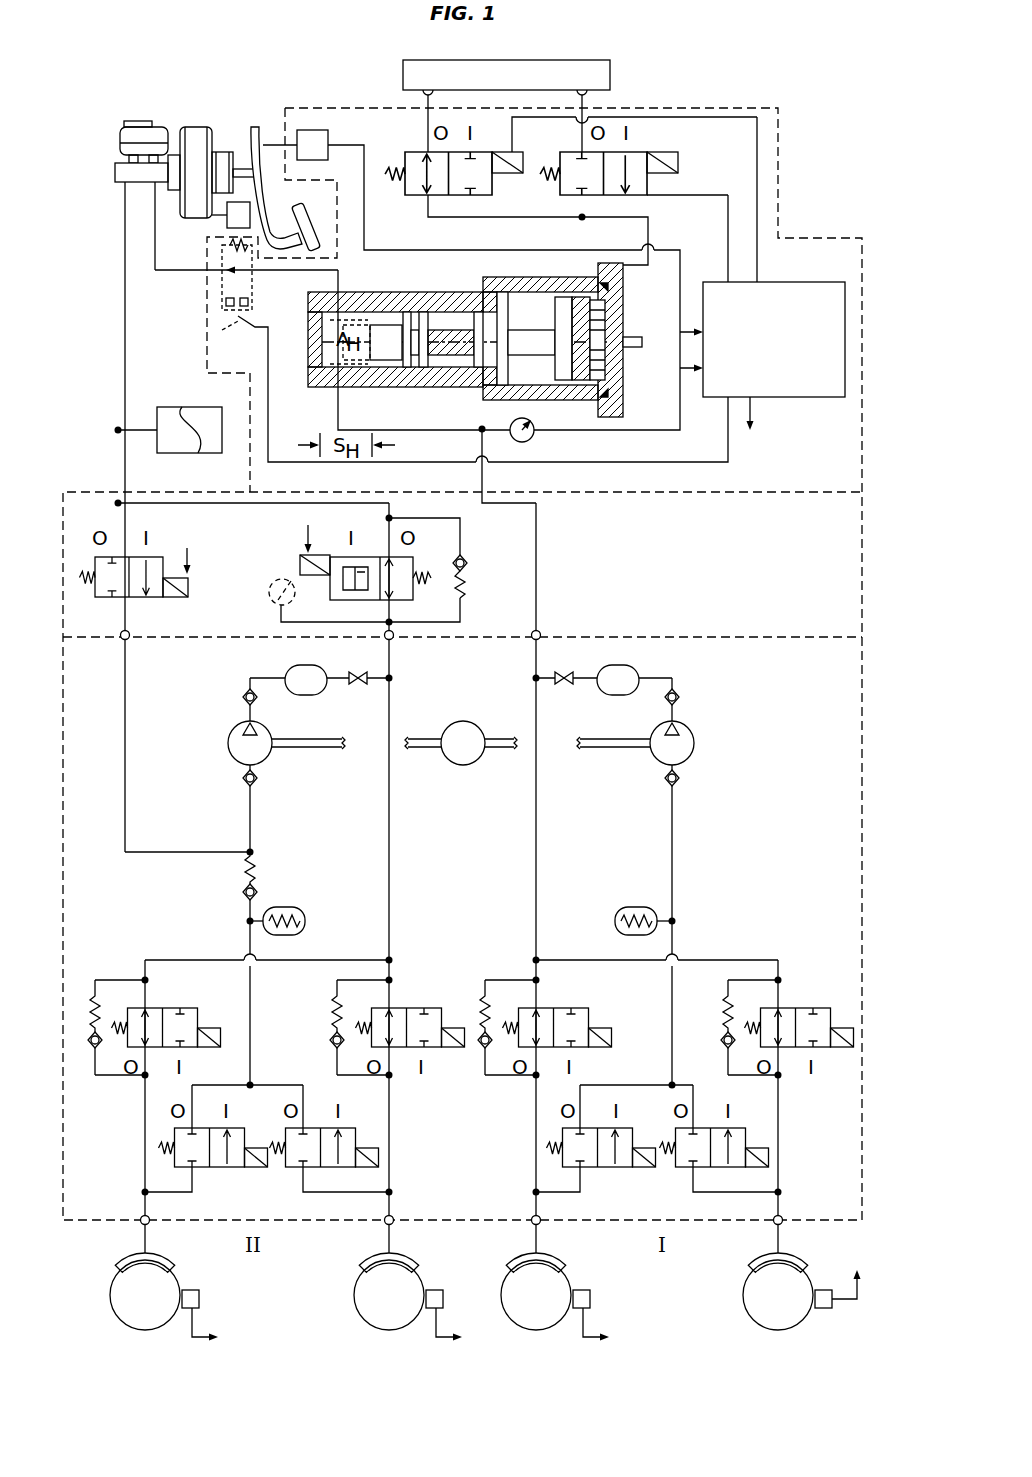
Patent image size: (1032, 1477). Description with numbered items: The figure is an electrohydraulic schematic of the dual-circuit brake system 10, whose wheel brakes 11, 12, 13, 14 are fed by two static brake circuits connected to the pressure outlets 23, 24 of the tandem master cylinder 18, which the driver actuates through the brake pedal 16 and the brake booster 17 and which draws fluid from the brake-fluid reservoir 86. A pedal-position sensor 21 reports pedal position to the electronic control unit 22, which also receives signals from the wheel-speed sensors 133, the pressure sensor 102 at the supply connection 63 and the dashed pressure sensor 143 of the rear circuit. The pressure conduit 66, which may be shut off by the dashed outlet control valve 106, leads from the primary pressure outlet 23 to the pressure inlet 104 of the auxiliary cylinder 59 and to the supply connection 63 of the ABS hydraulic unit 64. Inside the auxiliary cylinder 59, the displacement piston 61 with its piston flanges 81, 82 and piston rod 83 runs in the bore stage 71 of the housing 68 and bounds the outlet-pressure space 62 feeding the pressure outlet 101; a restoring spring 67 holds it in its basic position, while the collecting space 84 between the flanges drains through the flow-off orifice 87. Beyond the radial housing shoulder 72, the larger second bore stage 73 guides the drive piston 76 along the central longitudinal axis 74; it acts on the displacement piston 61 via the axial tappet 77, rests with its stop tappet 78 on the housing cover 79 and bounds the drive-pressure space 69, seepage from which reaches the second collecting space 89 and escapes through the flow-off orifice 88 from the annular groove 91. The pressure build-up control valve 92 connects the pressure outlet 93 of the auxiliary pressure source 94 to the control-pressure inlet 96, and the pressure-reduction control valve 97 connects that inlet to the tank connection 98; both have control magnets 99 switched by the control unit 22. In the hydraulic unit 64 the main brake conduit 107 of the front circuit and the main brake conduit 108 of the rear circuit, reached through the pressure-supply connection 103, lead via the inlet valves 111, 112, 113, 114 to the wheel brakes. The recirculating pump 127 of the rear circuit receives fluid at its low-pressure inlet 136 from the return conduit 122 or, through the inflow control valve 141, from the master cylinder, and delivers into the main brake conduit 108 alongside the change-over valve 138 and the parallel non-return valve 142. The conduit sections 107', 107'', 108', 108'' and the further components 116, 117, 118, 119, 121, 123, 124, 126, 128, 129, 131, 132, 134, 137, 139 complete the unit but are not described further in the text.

The dual-circuit brake system 10 is at (111, 123).
The wheel brake 11 is at (564, 1274).
The wheel brake 12 is at (806, 1274).
The wheel brake 13 is at (176, 1274).
The wheel brake 14 is at (418, 1274).
The brake pedal 16 is at (312, 240).
The brake booster 17 is at (194, 124).
The tandem master cylinder 18 is at (111, 172).
The pedal-position sensor 21 is at (326, 131).
The electronic control unit 22 is at (805, 281).
The primary pressure outlet 23 is at (155, 188).
The secondary pressure outlet 24 is at (127, 186).
The auxiliary cylinder 59 is at (304, 386).
The displacement piston 61 is at (384, 322).
The outlet-pressure space 62 is at (323, 346).
The supply connection 63 is at (541, 632).
The hydraulic unit 64 is at (700, 648).
The pressure conduit 66 is at (186, 273).
The restoring spring 67 is at (321, 318).
The housing 68 is at (630, 368).
The drive-pressure space 69 is at (604, 375).
The bore stage 71 is at (452, 358).
The radial housing shoulder 72 is at (502, 291).
The second bore stage 73 is at (548, 295).
The central longitudinal axis 74 is at (628, 343).
The drive piston 76 is at (585, 404).
The axial tappet 77 is at (541, 357).
The stop tappet 78 is at (608, 322).
The housing cover 79 is at (602, 340).
The piston flange 81 is at (406, 370).
The second piston flange 82 is at (479, 370).
The piston rod 83 is at (424, 370).
The annular collecting space 84 is at (462, 328).
The brake-fluid reservoir 86 is at (163, 127).
The flow-off orifice 87 is at (439, 300).
The flow-off orifice 88 is at (503, 400).
The second annular collecting space 89 is at (546, 386).
The annular groove 91 is at (512, 297).
The pressure build-up control valve 92 is at (645, 197).
The pressure outlet 93 is at (588, 92).
The auxiliary pressure source 94 is at (568, 62).
The control-pressure inlet 96 is at (620, 296).
The pressure-reduction control valve 97 is at (405, 185).
The tank connection 98 is at (422, 92).
The control magnet 99 is at (505, 175).
The pressure outlet 101 is at (374, 386).
The pressure sensor 102 is at (530, 437).
The pressure-supply connection 103 is at (394, 640).
The pressure inlet 104 is at (318, 292).
The outlet control valve 106 is at (205, 335).
The main brake conduit 107 is at (512, 819).
The brake line 107' is at (511, 1106).
The brake line 107'' is at (806, 1106).
The main brake conduit 108 is at (365, 819).
The brake line 108' is at (119, 1106).
The brake line 108'' is at (418, 1106).
The inlet valve 111 is at (562, 1008).
The inlet valve 112 is at (802, 1008).
The inlet valve 113 is at (171, 1008).
The inlet valve 114 is at (413, 1008).
The outlet valve 116 is at (600, 1170).
The outlet valve 117 is at (679, 1170).
The outlet valve 118 is at (210, 1170).
The outlet valve 119 is at (291, 1170).
The return line 121 is at (700, 1061).
The return conduit 122 is at (275, 1062).
The pressure relief valve 123 is at (641, 906).
The pressure relief valve 124 is at (282, 906).
The pump 126 is at (688, 728).
The recirculating pump 127 is at (236, 728).
The check valve 128 is at (243, 778).
The check valve 129 is at (243, 696).
The check valve 131 is at (332, 1036).
The electric motor 132 is at (456, 768).
The wheel-speed sensors 133 is at (199, 1296).
The connection 134 is at (129, 640).
The low-pressure inlet 136 is at (247, 850).
The check valve with spring 137 is at (244, 872).
The change-over valve 138 is at (437, 546).
The solenoid 139 is at (300, 560).
The inflow control valve 141 is at (165, 562).
The non-return valve 142 is at (466, 562).
The pressure sensor 143 is at (270, 592).